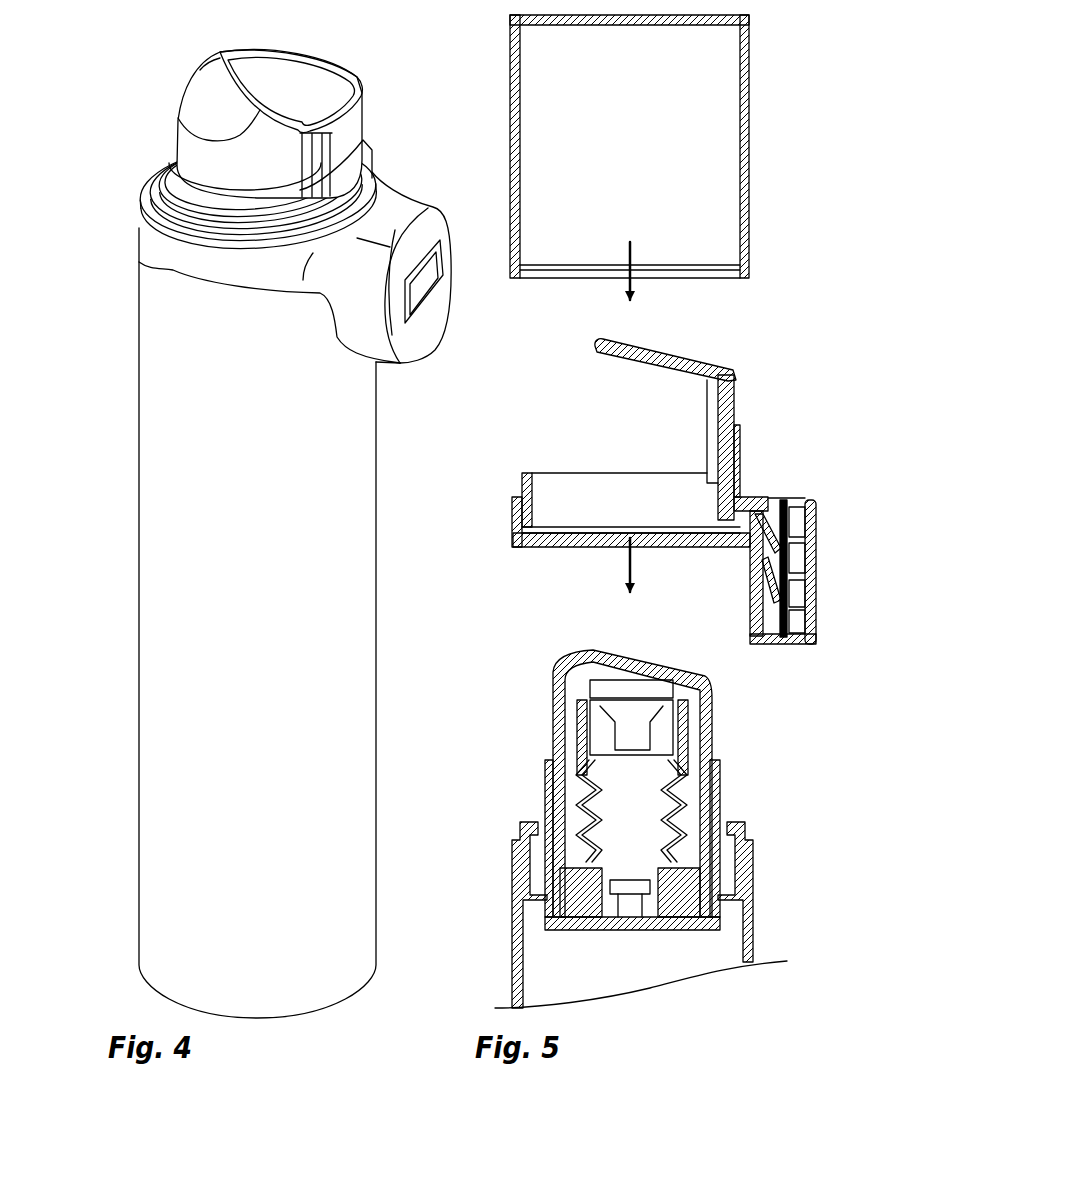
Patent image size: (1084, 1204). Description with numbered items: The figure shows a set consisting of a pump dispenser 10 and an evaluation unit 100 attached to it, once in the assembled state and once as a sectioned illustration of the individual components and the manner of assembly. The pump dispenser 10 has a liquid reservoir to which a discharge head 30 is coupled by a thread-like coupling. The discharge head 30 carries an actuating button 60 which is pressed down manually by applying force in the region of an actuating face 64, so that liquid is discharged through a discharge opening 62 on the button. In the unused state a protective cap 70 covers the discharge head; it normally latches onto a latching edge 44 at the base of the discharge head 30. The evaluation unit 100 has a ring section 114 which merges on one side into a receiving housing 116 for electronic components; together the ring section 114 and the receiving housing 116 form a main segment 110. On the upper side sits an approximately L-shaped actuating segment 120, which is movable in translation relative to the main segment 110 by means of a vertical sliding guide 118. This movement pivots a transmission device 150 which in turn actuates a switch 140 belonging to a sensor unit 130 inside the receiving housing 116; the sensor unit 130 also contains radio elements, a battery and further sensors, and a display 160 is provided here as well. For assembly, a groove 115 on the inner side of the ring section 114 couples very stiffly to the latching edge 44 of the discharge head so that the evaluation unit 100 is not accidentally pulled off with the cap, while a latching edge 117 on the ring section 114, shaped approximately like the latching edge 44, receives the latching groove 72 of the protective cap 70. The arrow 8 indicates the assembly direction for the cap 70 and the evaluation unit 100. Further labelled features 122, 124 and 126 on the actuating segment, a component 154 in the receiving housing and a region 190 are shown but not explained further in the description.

In FIG. 5, the arrow 8 is at (626, 305).
In FIG. 4, the pump dispenser 10 is at (388, 604).
In FIG. 5, the discharge head 30 is at (528, 810).
In FIG. 5, the latching edge 44 is at (515, 856).
In FIG. 4, the actuating button 60 is at (212, 100).
In FIG. 5, the actuating button 60 is at (560, 676).
In FIG. 4, the discharge opening 62 is at (213, 62).
In FIG. 4, the actuating face 64 is at (222, 140).
In FIG. 5, the actuating face 64 is at (690, 690).
In FIG. 5, the protective cap 70 is at (516, 44).
In FIG. 5, the latching groove 72 is at (730, 268).
In FIG. 4, the evaluation unit 100 is at (442, 340).
In FIG. 5, the evaluation unit 100 is at (560, 440).
In FIG. 4, the main segment 110 is at (373, 163).
In FIG. 5, the main segment 110 is at (746, 466).
In FIG. 4, the ring section 114 is at (240, 263).
In FIG. 5, the ring section 114 is at (512, 521).
In FIG. 5, the groove 115 is at (553, 548).
In FIG. 4, the receiving housing 116 is at (410, 343).
In FIG. 5, the receiving housing 116 is at (776, 652).
In FIG. 4, the latching edge 117 is at (212, 227).
In FIG. 5, the latching edge 117 is at (518, 488).
In FIG. 5, the vertical sliding guide 118 is at (740, 432).
In FIG. 4, the actuating segment 120 is at (286, 100).
In FIG. 5, the actuating segment 120 is at (707, 406).
In FIG. 4, the lid side wall 122 is at (348, 125).
In FIG. 5, the lid side wall 122 is at (734, 396).
In FIG. 4, the lid top flange 124 is at (286, 62).
In FIG. 5, the lid top flange 124 is at (653, 356).
In FIG. 5, the lid inner corner 126 is at (706, 472).
In FIG. 5, the sensor unit 130 is at (772, 608).
In FIG. 5, the switch 140 is at (762, 575).
In FIG. 5, the transmission device 150 is at (710, 538).
In FIG. 5, the inner plate 154 is at (758, 552).
In FIG. 4, the display 160 is at (437, 283).
In FIG. 5, the display 160 is at (798, 522).
In FIG. 5, the tray cavity 190 is at (619, 491).